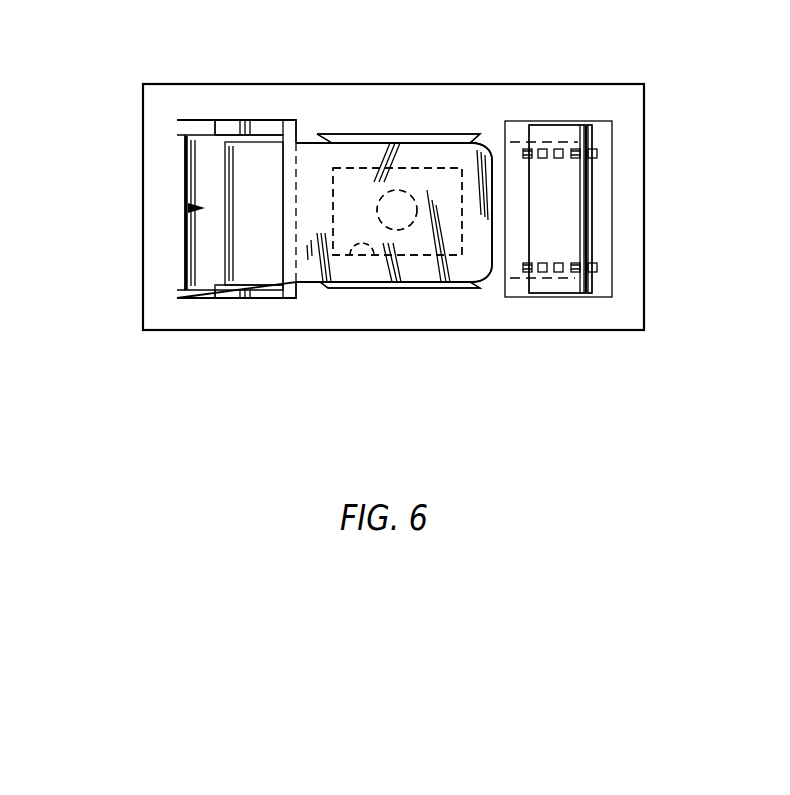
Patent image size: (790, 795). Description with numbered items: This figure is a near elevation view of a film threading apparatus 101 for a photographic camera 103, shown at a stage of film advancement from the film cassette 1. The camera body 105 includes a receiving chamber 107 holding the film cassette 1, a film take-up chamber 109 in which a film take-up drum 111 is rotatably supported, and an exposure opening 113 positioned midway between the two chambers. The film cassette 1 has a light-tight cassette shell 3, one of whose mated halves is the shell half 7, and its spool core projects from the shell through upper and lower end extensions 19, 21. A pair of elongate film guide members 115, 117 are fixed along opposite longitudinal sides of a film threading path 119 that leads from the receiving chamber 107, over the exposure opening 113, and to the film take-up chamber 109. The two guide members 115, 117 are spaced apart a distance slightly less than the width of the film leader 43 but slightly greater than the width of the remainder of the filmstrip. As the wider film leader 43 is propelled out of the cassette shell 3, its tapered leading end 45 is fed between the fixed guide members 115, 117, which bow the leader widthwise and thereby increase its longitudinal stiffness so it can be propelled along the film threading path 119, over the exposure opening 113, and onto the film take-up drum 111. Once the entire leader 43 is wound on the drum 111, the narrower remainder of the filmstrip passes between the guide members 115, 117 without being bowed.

The film cassette 1 is at (200, 208).
The cassette shell 3 is at (210, 272).
The shell half 7 is at (208, 171).
The upper end extension 19 is at (232, 128).
The lower end extension 21 is at (230, 298).
The film leader 43 is at (420, 153).
The tapered leading end 45 is at (497, 142).
The film threading apparatus 101 is at (448, 288).
The photographic camera 103 is at (587, 80).
The camera body 105 is at (167, 331).
The receiving chamber 107 is at (190, 233).
The film take-up chamber 109 is at (608, 198).
The film take-up drum 111 is at (563, 293).
The exposure opening 113 is at (370, 245).
The film guide member 115 is at (380, 143).
The film guide member 117 is at (402, 288).
The film threading path 119 is at (488, 140).